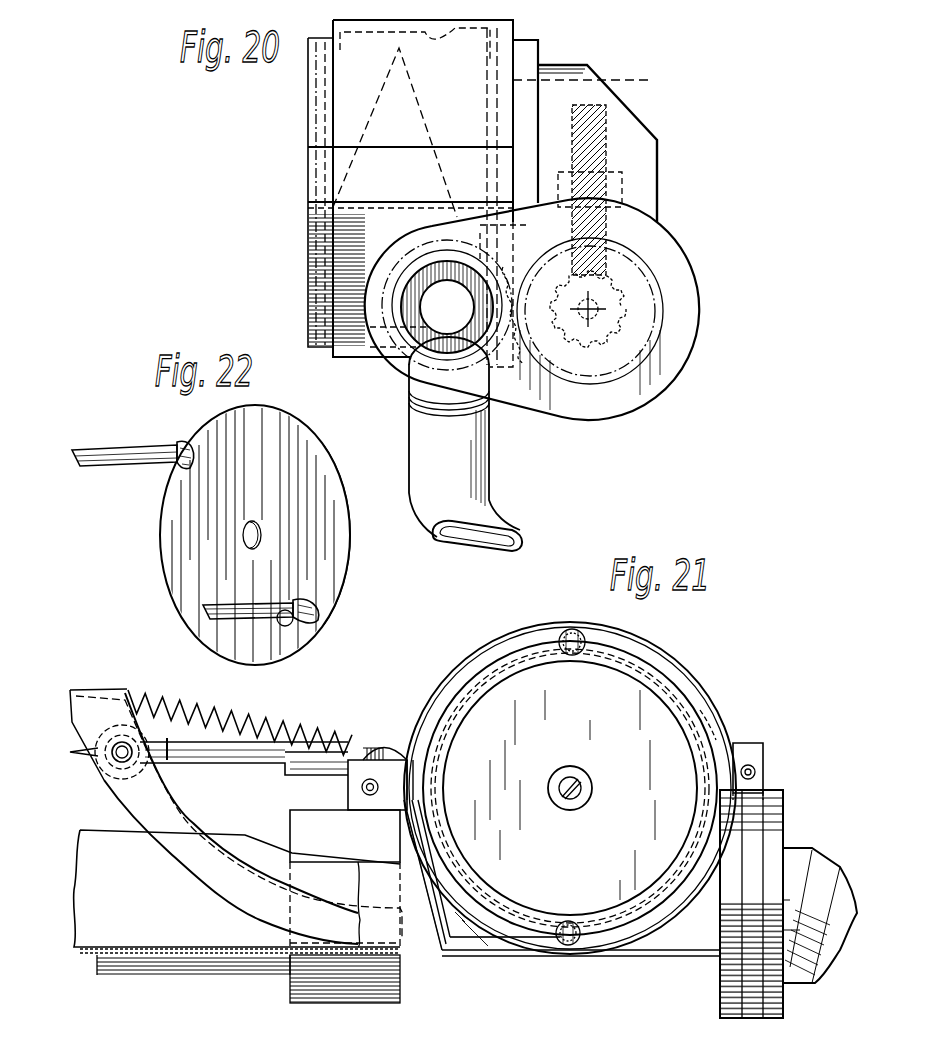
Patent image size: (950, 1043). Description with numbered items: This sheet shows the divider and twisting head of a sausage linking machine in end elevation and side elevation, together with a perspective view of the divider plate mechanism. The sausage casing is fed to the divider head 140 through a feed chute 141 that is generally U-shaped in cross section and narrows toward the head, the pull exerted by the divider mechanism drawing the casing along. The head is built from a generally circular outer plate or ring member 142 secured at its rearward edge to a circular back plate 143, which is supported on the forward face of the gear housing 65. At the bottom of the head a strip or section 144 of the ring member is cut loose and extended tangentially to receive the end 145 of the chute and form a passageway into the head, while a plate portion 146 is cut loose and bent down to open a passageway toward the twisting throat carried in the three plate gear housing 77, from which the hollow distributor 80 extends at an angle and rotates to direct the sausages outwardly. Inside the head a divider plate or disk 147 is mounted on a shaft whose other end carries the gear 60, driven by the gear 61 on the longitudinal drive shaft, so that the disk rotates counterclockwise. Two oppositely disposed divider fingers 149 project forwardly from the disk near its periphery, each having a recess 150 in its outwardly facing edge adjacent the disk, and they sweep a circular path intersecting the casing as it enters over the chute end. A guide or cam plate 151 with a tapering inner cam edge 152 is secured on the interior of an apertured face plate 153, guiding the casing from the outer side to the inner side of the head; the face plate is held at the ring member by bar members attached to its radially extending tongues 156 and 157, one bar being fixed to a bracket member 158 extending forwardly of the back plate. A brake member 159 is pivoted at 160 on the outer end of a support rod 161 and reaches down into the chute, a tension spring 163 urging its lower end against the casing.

In FIG. 20, the gear 60 is at (605, 100).
In FIG. 20, the gear 61 is at (595, 309).
In FIG. 20, the gear housing 65 is at (636, 134).
In FIG. 20, the three plate gear housing 77 is at (660, 236).
In FIG. 20, the hollow distributor 80 is at (472, 460).
In FIG. 20, the divider head 140 is at (306, 171).
In FIG. 21, the divider head 140 is at (501, 628).
In FIG. 21, the feed chute 141 is at (192, 935).
In FIG. 20, the outer plate or ring member 142 is at (340, 108).
In FIG. 21, the outer plate or ring member 142 is at (646, 643).
In FIG. 20, the circular back plate 143 is at (515, 29).
In FIG. 21, the strip or section 144 is at (482, 946).
In FIG. 21, the end of the chute 145 is at (426, 946).
In FIG. 21, the plate portion 146 is at (642, 952).
In FIG. 22, the divider plate or disk 147 is at (268, 412).
In FIG. 21, the divider plate or disk 147 is at (572, 745).
In FIG. 22, the divider fingers 149 is at (158, 470).
In FIG. 22, the recess 150 is at (172, 445).
In FIG. 21, the recess 150 is at (570, 918).
In FIG. 20, the guide or cam plate 151 is at (333, 78).
In FIG. 21, the guide or cam plate 151 is at (703, 712).
In FIG. 20, the inner cam edge 152 is at (432, 124).
In FIG. 20, the apertured face plate 153 is at (312, 251).
In FIG. 21, the apertured face plate 153 is at (680, 690).
In FIG. 21, the radially extending tongue 156 is at (745, 745).
In FIG. 21, the radially extending tongue 157 is at (403, 726).
In FIG. 20, the bracket member 158 is at (498, 160).
In FIG. 21, the brake member 159 is at (200, 832).
In FIG. 21, the pivot 160 is at (112, 778).
In FIG. 21, the support rod 161 is at (218, 752).
In FIG. 21, the tension spring 163 is at (195, 697).